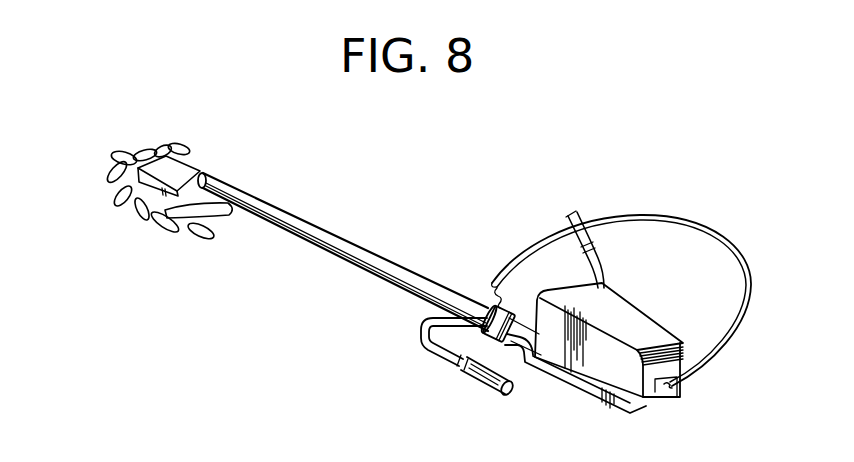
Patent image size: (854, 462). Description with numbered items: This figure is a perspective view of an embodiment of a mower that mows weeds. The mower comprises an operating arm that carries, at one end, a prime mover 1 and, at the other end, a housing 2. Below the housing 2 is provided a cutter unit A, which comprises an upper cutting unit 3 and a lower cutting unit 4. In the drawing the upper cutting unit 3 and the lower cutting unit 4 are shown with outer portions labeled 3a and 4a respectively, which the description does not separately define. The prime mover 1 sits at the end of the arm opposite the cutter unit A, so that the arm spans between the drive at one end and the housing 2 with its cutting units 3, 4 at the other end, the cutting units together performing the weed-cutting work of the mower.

The prime mover 1 is at (624, 316).
The housing 2 is at (150, 168).
The upper cutting unit 3 is at (134, 210).
The hook finger tip 3a is at (173, 232).
The lower cutting unit 4 is at (192, 236).
The hook finger tip 4a is at (206, 234).
The cutter unit A is at (92, 178).